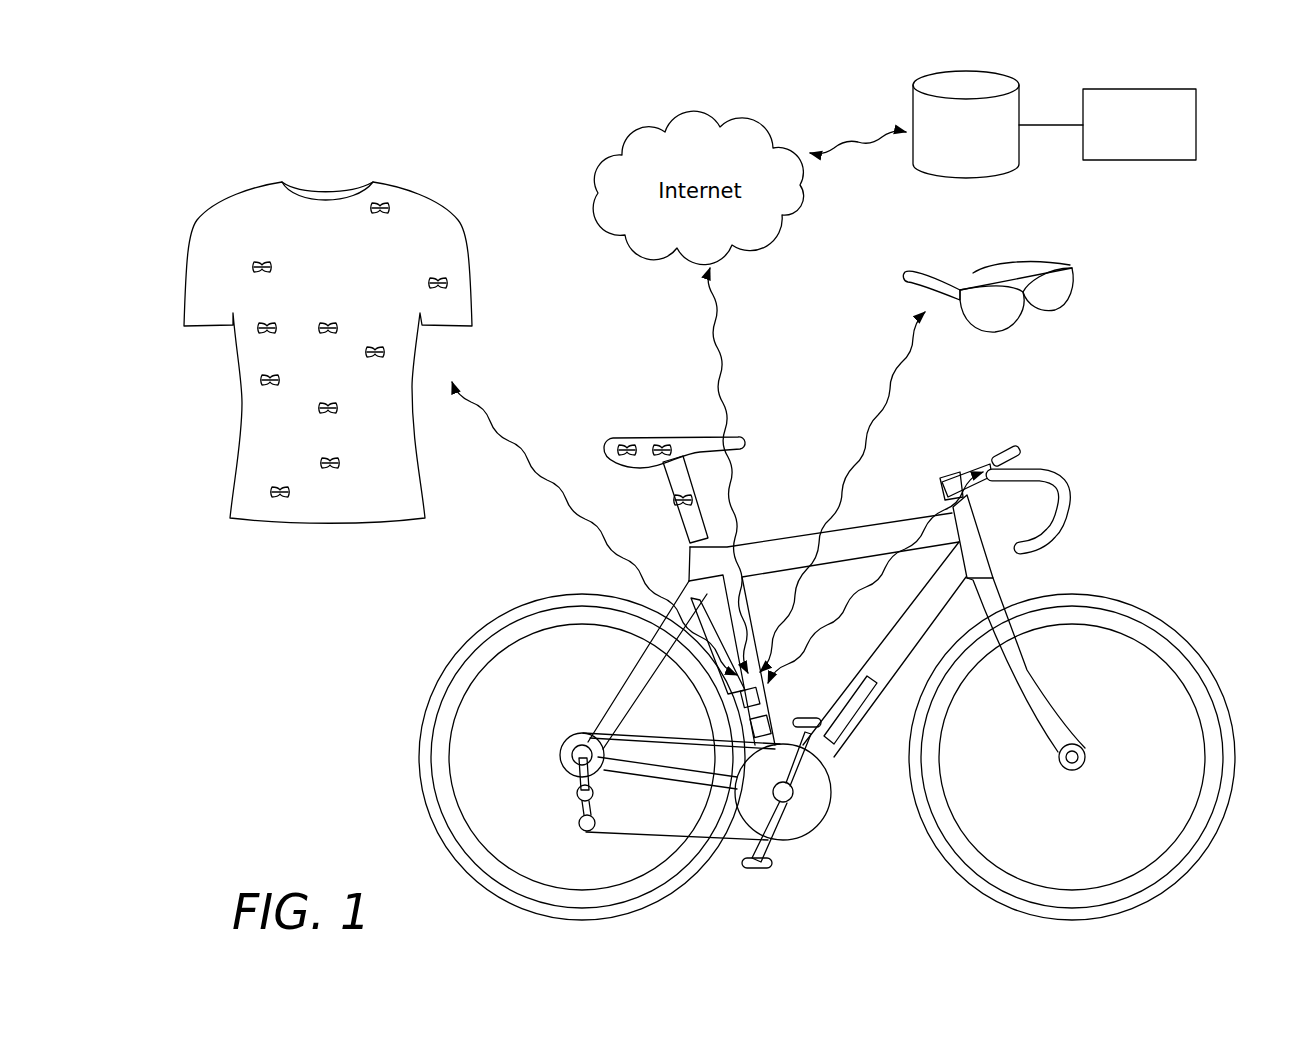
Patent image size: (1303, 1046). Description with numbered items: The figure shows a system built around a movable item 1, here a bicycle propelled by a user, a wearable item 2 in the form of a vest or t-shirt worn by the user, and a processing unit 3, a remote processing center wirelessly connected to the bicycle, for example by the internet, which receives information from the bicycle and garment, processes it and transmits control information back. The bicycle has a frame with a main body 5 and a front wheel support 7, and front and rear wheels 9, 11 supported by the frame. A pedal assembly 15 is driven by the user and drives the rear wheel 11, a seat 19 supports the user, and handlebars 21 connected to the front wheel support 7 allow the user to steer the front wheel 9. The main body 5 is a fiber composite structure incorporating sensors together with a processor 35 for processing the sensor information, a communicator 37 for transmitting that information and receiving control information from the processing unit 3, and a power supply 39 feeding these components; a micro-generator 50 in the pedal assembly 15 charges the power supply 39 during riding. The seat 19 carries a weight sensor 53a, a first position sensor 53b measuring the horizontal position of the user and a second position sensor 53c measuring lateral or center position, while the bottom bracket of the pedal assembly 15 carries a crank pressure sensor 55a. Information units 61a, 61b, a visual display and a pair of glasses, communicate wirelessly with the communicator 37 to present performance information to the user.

The movable item 1 is at (1240, 532).
The wearable item 2 is at (160, 240).
The processing unit 3 is at (1227, 95).
The main body 5 is at (877, 520).
The front wheel support 7 is at (558, 800).
The front wheel 9 is at (1213, 677).
The rear wheel 11 is at (487, 625).
The pedal assembly 15 is at (772, 875).
The seat 19 is at (640, 464).
The handlebars 21 is at (1077, 495).
The processor 35 is at (748, 717).
The communicator 37 is at (746, 693).
The power supply 39 is at (860, 697).
The micro-generator 50 is at (811, 829).
The weight sensor 53a is at (680, 500).
The first position sensor 53b is at (627, 440).
The second position sensor 53c is at (662, 440).
The crank pressure sensor 55a is at (775, 825).
The information unit 61a is at (1020, 442).
The information unit 61b is at (1083, 278).